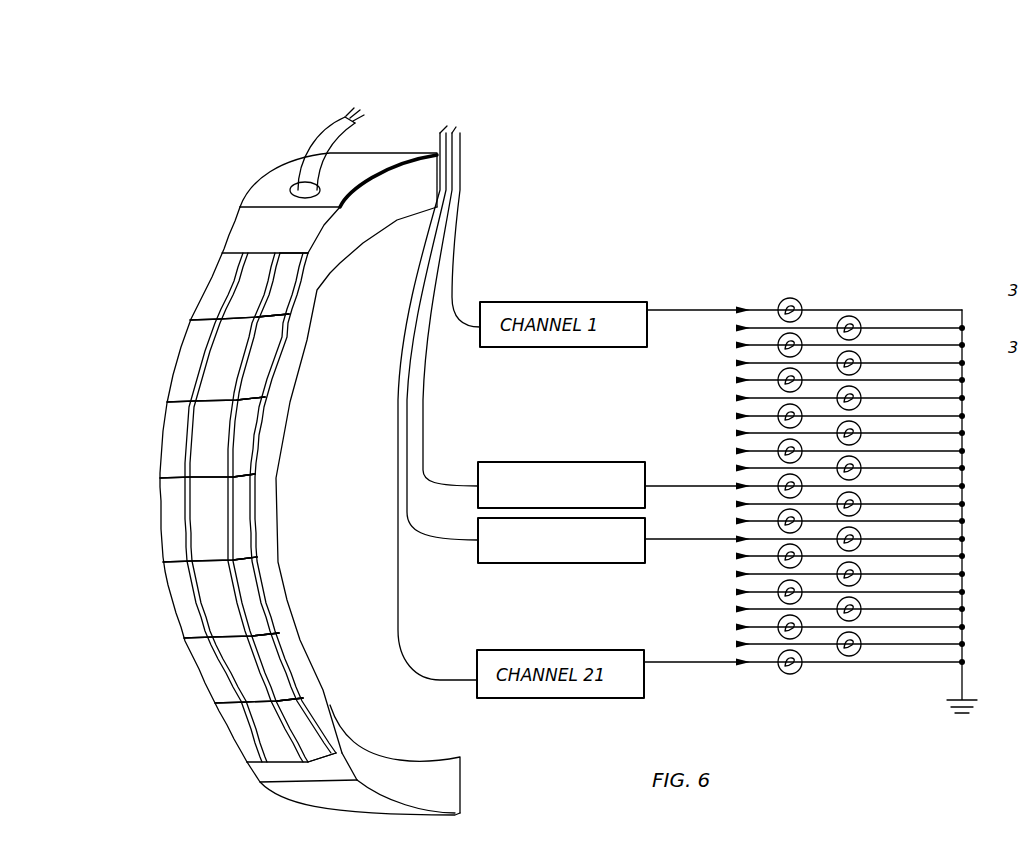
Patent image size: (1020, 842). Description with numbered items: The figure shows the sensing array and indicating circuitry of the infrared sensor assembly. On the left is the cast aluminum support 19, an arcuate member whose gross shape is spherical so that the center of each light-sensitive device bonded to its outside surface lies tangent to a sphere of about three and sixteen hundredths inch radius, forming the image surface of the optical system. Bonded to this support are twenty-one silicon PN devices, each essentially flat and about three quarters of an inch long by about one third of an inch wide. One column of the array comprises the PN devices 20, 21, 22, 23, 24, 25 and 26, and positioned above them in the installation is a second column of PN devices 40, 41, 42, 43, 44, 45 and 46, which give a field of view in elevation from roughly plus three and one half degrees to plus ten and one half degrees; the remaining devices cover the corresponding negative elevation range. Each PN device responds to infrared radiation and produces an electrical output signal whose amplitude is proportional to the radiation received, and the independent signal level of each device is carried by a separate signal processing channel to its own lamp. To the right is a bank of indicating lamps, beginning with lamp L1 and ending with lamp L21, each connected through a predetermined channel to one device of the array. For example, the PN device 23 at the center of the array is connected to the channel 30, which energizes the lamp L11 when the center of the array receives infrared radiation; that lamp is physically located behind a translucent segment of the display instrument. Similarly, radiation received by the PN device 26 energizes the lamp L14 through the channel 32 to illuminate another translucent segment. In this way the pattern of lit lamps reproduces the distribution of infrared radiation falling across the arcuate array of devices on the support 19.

The cast aluminum support 19 is at (403, 773).
The PN device 20 is at (233, 292).
The PN device 21 is at (212, 368).
The PN device 22 is at (193, 443).
The PN device 23 is at (203, 512).
The PN device 24 is at (217, 600).
The PN device 25 is at (232, 657).
The PN device 26 is at (262, 718).
The PN device 40 is at (275, 308).
The PN device 41 is at (249, 382).
The PN device 42 is at (241, 455).
The PN device 43 is at (244, 533).
The PN device 44 is at (253, 612).
The PN device 45 is at (278, 680).
The PN device 46 is at (303, 737).
The channel 30 is at (622, 443).
The channel 32 is at (609, 554).
The lamp L1 is at (798, 297).
The lamp L11 is at (780, 484).
The lamp L14 is at (853, 527).
The lamp L21 is at (790, 674).